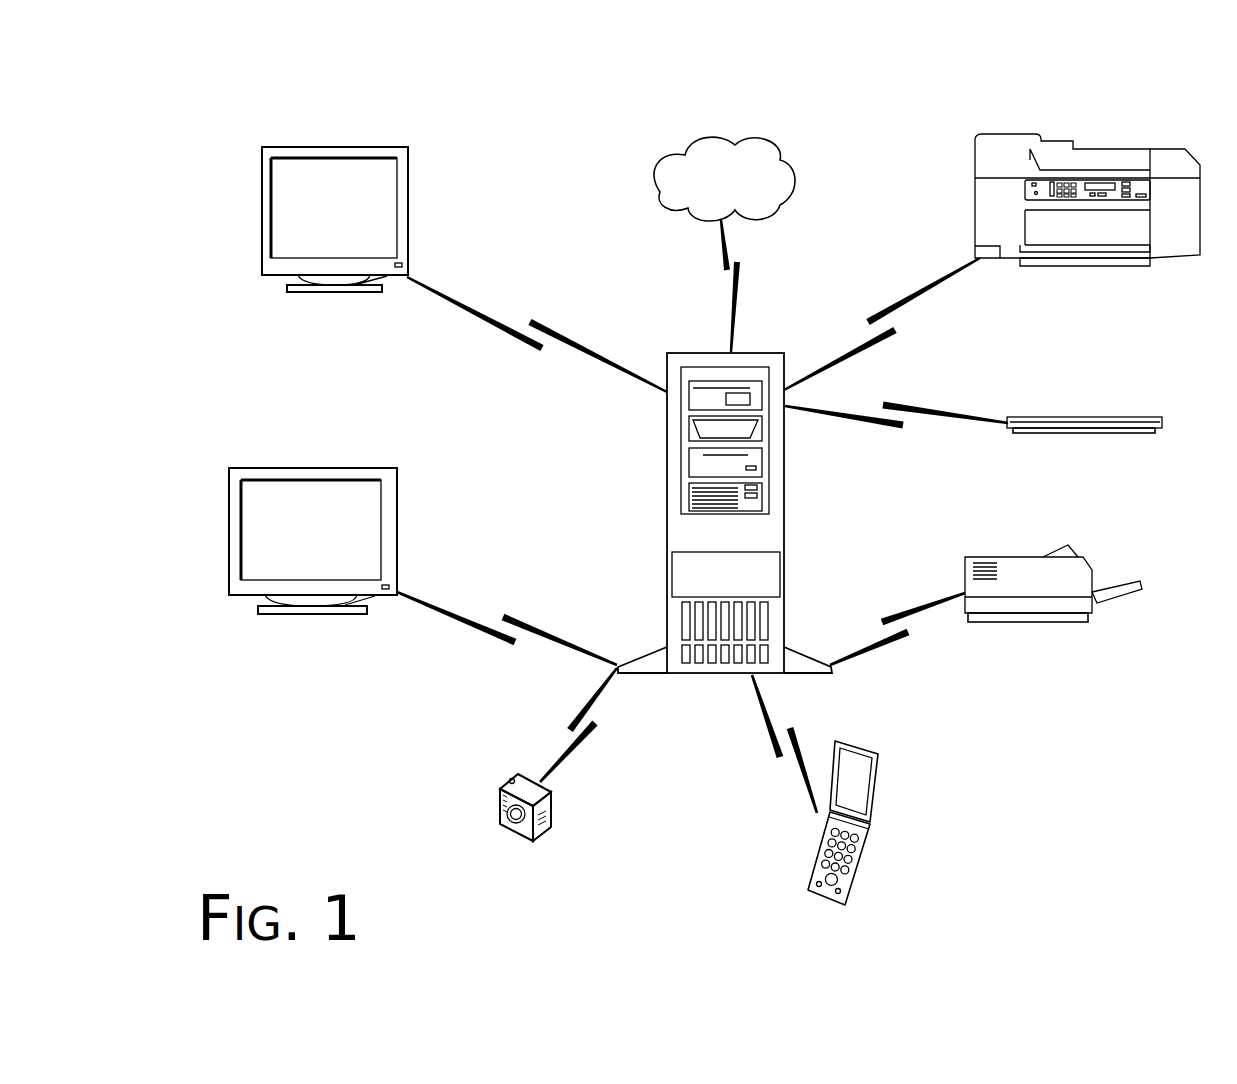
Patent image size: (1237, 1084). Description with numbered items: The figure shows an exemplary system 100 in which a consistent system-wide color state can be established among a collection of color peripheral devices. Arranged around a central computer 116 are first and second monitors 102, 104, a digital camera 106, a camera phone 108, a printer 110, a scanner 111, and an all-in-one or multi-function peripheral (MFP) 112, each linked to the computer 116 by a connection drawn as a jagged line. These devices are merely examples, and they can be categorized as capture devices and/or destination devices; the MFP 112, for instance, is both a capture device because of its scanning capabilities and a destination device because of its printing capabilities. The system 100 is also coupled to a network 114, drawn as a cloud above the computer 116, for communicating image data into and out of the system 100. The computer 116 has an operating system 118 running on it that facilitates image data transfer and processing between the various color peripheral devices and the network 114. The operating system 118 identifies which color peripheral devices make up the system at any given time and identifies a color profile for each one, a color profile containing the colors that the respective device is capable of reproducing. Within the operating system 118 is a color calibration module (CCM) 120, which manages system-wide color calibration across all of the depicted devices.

The system 100 is at (852, 86).
The first monitor 102 is at (335, 202).
The second monitor 104 is at (313, 522).
The digital camera 106 is at (540, 829).
The camera phone 108 is at (858, 846).
The printer 110 is at (1053, 600).
The scanner 111 is at (1084, 440).
The multi-function peripheral (MFP) 112 is at (1087, 186).
The network 114 is at (724, 179).
The computer 116 is at (788, 492).
The operating system 118 is at (722, 535).
The color calibration module (CCM) 120 is at (726, 574).